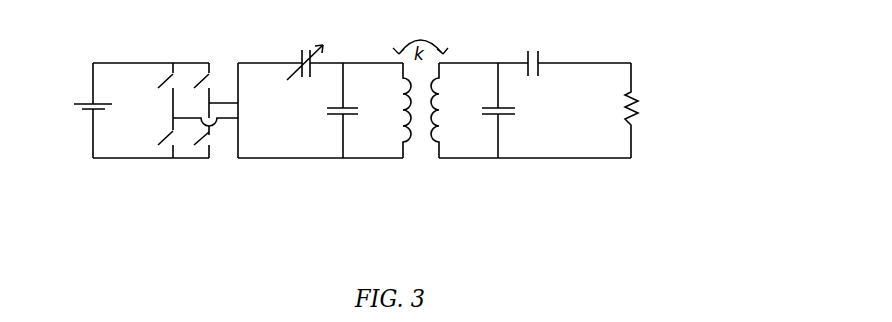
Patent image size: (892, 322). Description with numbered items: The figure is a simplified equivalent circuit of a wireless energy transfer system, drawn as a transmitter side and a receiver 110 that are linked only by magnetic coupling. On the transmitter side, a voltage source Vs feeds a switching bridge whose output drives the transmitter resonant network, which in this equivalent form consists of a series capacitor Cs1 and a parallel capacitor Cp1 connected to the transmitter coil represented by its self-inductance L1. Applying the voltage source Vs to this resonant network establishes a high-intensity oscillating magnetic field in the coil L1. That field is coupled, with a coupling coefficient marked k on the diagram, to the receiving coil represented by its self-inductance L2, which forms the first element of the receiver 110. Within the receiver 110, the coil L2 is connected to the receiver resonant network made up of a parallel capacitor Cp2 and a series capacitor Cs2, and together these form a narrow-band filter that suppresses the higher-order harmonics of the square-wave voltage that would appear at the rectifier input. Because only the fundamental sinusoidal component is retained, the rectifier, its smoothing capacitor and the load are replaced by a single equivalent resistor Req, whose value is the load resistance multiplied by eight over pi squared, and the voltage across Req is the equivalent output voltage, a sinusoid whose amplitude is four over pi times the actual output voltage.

The receiver 110 is at (582, 126).
The voltage source Vs is at (76, 110).
The transmitter series capacitor Cs1 is at (306, 50).
The transmitter parallel capacitor Cp1 is at (318, 110).
The self-inductance of transmitter coil L1 is at (395, 110).
The self-inductance of receiver coil L2 is at (449, 110).
The receiver series capacitor Cs2 is at (532, 48).
The receiver parallel capacitor Cp2 is at (522, 110).
The equivalent resistor Req is at (610, 110).